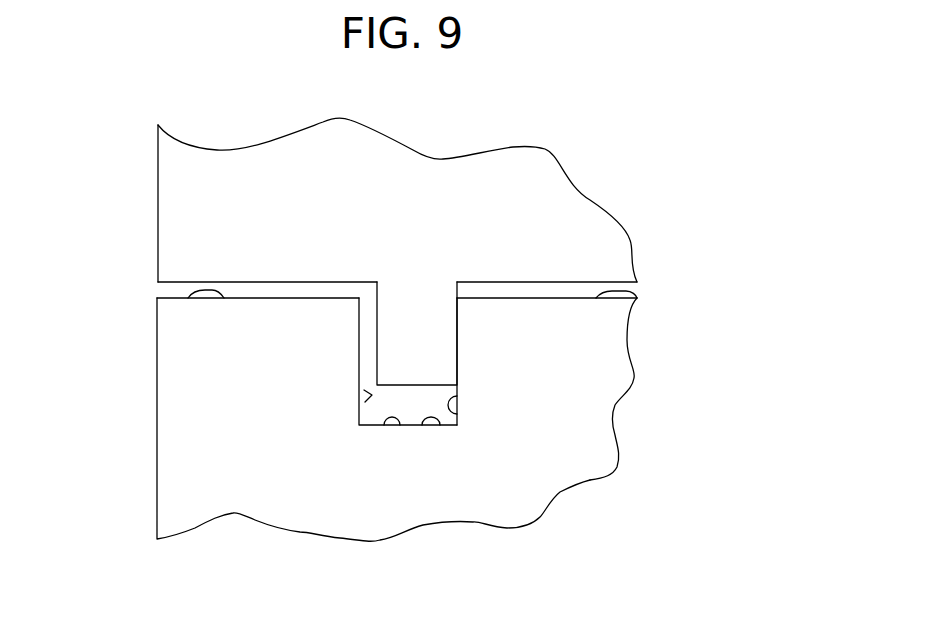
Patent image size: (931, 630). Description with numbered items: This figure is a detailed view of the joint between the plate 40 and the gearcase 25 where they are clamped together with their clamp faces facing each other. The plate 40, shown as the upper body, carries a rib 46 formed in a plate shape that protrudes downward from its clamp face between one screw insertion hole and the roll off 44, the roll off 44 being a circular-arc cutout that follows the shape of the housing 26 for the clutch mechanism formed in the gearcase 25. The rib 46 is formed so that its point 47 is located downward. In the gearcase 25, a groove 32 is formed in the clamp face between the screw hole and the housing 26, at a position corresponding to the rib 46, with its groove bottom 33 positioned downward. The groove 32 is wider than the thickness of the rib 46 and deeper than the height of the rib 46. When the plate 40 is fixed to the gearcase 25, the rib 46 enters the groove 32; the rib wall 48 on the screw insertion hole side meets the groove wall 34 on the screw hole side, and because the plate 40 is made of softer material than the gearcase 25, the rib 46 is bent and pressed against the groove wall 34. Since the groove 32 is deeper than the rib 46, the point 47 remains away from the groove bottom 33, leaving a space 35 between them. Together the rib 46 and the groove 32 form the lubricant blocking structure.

The plate 40 is at (518, 193).
The roll off 44 is at (157, 197).
The rib 46 is at (408, 327).
The housing for the clutch mechanism 26 is at (157, 431).
The gearcase 25 is at (527, 460).
The rib wall 48 is at (458, 350).
The point 47 is at (387, 388).
The space 35 is at (370, 396).
The groove 32 is at (384, 426).
The groove bottom 33 is at (438, 428).
The groove wall 34 is at (458, 425).